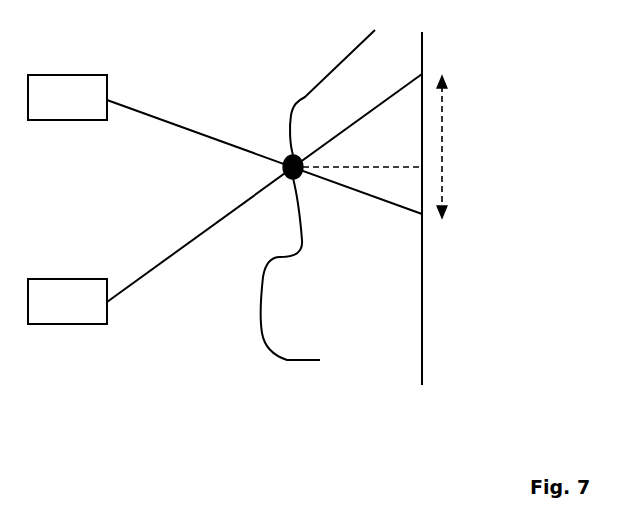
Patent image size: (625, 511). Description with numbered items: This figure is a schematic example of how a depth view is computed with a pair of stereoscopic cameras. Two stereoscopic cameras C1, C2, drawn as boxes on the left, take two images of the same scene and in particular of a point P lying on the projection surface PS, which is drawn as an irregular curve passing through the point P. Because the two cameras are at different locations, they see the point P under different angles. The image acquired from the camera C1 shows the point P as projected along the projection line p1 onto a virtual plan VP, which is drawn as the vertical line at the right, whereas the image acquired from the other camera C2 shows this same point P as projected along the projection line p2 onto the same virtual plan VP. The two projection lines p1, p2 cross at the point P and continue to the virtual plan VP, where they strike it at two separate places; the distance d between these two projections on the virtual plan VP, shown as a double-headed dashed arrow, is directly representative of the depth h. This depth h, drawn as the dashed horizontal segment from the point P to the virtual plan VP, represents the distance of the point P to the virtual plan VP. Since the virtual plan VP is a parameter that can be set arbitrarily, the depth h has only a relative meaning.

The first stereoscopic camera C1 is at (67, 97).
The second stereoscopic camera C2 is at (67, 301).
The projection line p1 is at (138, 112).
The projection line p2 is at (190, 242).
The point of the projection surface P is at (300, 180).
The projection surface PS is at (260, 312).
The depth h is at (362, 156).
The distance between the two projections d is at (452, 147).
The virtual plan VP is at (440, 208).